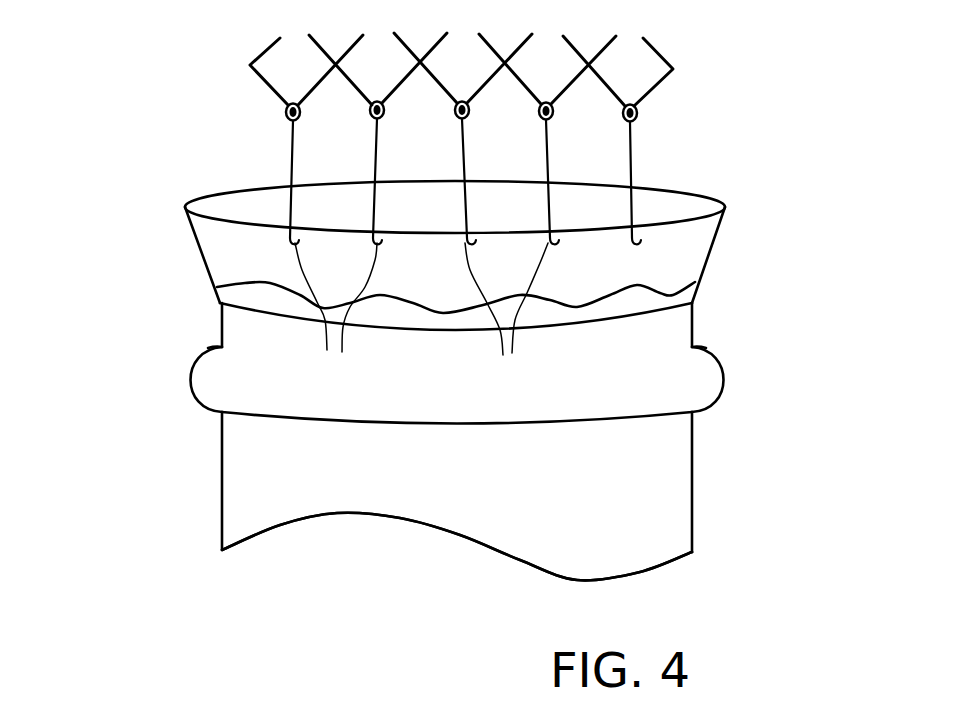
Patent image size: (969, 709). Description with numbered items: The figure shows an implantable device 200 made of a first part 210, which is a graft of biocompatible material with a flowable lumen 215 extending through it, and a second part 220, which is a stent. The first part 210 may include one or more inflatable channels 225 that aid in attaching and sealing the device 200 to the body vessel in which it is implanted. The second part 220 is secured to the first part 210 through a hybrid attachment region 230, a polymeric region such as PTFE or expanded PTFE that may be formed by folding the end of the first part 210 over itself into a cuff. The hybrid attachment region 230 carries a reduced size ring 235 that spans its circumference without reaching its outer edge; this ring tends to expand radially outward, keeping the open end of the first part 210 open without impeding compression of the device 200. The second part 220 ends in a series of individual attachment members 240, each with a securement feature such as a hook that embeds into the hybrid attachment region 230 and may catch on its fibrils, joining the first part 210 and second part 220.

The implantable device 200 is at (150, 127).
The first part 210 is at (668, 472).
The flowable lumen 215 is at (447, 588).
The second part 220 is at (688, 110).
The inflatable channels 225 is at (703, 373).
The hybrid attachment region 230 is at (227, 256).
The reduced size ring 235 is at (698, 287).
The attachment members 240 is at (634, 240).